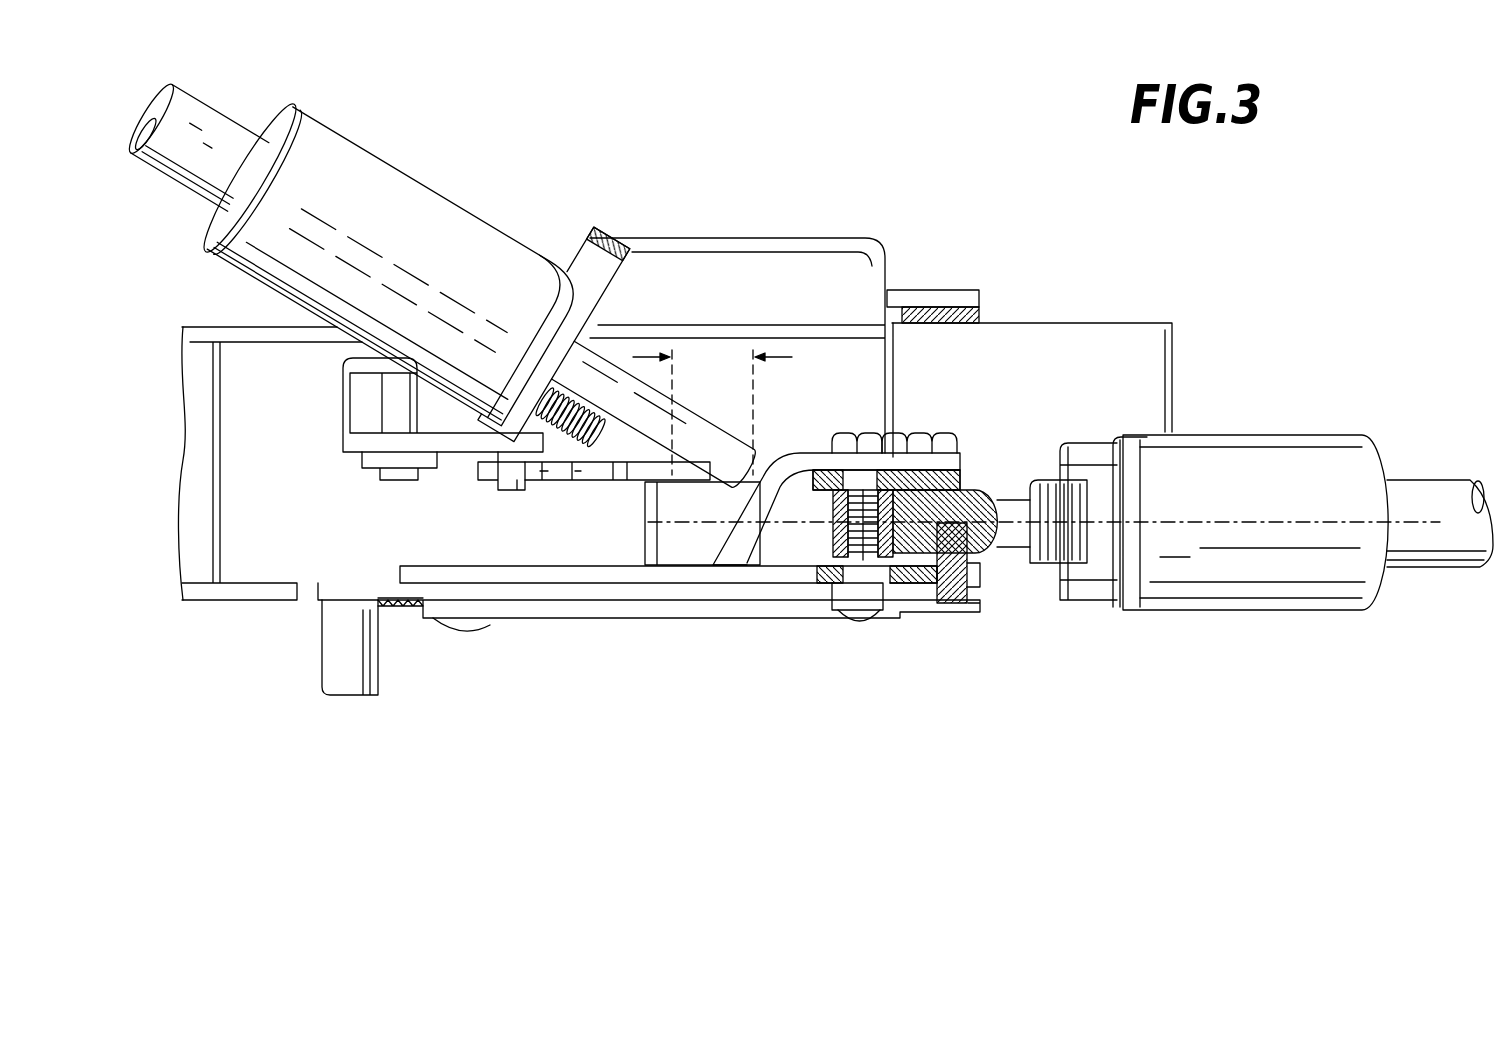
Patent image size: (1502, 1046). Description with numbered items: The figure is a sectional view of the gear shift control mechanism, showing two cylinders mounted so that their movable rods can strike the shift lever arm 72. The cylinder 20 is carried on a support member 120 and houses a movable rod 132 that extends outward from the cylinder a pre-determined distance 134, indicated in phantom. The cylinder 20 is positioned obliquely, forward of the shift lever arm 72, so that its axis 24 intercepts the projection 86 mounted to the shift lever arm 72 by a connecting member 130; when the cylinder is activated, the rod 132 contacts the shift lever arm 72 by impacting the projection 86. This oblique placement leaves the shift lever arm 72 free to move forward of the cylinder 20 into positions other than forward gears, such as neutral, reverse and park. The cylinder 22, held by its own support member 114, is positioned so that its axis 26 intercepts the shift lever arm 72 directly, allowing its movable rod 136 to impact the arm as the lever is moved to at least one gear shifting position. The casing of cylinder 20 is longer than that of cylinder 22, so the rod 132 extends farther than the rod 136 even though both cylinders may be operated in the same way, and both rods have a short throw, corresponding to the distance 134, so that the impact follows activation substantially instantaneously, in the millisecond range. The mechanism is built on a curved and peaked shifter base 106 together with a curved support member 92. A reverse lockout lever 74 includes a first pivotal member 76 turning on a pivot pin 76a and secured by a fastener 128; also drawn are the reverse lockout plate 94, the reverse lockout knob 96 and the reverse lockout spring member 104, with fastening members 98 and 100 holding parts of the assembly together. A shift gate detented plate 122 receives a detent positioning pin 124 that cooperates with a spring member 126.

The cylinder 20 is at (313, 117).
The cylinder 22 is at (1307, 437).
The axis 24 is at (397, 270).
The axis 26 is at (663, 527).
The shift lever arm 72 is at (997, 483).
The reverse lockout lever 74 is at (964, 461).
The first pivotal member 76 is at (830, 532).
The pivot pin 76a is at (873, 623).
The projection 86 is at (778, 470).
The curved support member 92 is at (660, 612).
The reverse lockout plate 94 is at (573, 592).
The reverse lockout knob 96 is at (358, 678).
The fastening member 98 is at (482, 622).
The fastening member 100 is at (858, 620).
The reverse lockout spring member 104 is at (398, 610).
The curved and peaked shifter base 106 is at (283, 493).
The support member 114 is at (1085, 322).
The support member 120 is at (655, 238).
The shift gate detented plate 122 is at (598, 473).
The detent positioning pin 124 is at (510, 492).
The spring member 126 is at (560, 433).
The fastener 128 is at (857, 433).
The connecting member 130 is at (924, 435).
The movable rod 132 is at (606, 345).
The pre-determined distance 134 is at (712, 407).
The movable rod 136 is at (1020, 547).